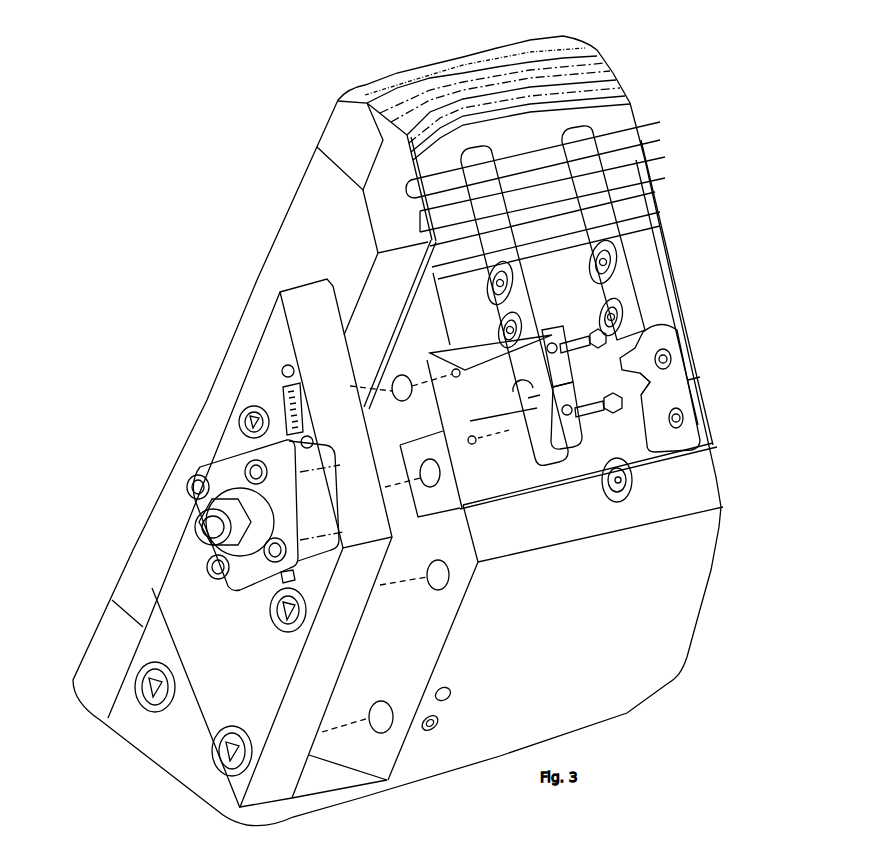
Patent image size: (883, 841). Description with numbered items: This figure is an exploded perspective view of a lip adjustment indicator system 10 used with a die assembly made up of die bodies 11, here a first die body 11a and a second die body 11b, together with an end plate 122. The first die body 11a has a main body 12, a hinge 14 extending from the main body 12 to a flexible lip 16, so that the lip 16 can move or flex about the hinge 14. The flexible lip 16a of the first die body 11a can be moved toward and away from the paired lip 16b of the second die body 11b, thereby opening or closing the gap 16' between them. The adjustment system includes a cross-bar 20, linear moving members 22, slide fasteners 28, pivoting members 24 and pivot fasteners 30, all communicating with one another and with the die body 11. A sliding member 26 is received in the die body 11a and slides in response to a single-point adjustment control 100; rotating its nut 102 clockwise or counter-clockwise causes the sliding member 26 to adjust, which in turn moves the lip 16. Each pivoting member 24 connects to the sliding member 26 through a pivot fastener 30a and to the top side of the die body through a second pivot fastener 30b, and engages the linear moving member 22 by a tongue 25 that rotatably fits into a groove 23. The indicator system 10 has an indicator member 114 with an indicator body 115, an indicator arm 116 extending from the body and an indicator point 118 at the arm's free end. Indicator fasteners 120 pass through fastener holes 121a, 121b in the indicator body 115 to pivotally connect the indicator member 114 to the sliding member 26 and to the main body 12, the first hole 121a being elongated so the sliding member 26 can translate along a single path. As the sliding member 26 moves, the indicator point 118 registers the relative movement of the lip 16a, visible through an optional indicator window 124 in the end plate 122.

The lip adjustment indicator system 10 is at (215, 297).
The die body 11 is at (737, 550).
The first die body 11a is at (643, 115).
The second die body 11b is at (350, 80).
The main body 12 is at (670, 670).
The hinge 14 is at (640, 187).
The lip 16 is at (554, 97).
The flexible lip 16a is at (600, 84).
The lip 16b is at (475, 75).
The gap 16' is at (559, 88).
The cross-bar 20 is at (628, 137).
The linear moving member 22 is at (597, 207).
The groove 23 is at (633, 384).
The pivoting member 24 is at (688, 432).
The tongue 25 is at (636, 352).
The sliding member 26 is at (710, 427).
The slide fastener 28 is at (608, 263).
The pivot fastener 30 is at (672, 368).
The pivot fastener 30a is at (668, 357).
The second pivot fastener 30b is at (678, 412).
The single-point adjustment control 100 is at (183, 565).
The nut 102 is at (195, 527).
The indicator member 114 is at (545, 413).
The indicator body 115 is at (535, 385).
The indicator arm 116 is at (485, 348).
The indicator point 118 is at (436, 353).
The indicator fastener 120 is at (594, 332).
The first fastener hole 121a is at (557, 432).
The fastener hole 121b is at (550, 333).
The end plate 122 is at (233, 788).
The indicator window 124 is at (280, 397).